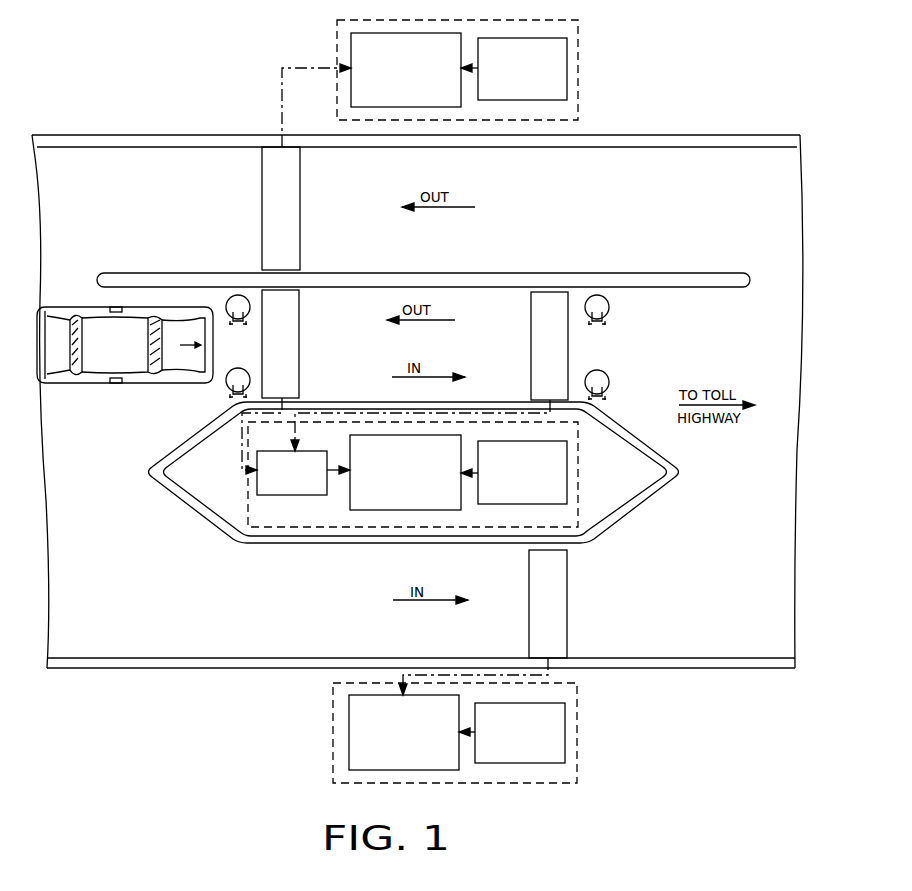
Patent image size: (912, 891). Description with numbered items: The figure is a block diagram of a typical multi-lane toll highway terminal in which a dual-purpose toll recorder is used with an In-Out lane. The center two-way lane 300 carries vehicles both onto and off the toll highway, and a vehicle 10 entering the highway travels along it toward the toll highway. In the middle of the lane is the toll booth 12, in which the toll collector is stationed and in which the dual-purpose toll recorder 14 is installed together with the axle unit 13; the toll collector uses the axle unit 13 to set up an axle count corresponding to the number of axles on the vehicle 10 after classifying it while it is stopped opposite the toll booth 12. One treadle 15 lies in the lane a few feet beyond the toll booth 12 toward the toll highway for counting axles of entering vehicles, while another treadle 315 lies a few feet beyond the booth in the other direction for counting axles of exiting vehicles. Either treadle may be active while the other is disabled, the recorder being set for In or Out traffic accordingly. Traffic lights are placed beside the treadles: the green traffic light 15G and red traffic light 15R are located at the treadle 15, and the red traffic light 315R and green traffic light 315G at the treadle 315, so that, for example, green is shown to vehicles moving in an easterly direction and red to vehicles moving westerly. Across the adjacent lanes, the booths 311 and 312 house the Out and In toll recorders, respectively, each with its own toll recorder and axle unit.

The vehicle 10 is at (100, 383).
The toll booth 12 is at (575, 476).
The axle unit 13 is at (563, 450).
The dual-purpose toll recorder 14 is at (461, 440).
The treadle 15 is at (537, 348).
The red traffic light 15R is at (609, 305).
The green traffic light 15G is at (607, 388).
The two-way lane 300 is at (468, 357).
The Out toll recorder booth 311 is at (578, 47).
The In toll recorder booth 312 is at (577, 740).
The treadle 315 is at (299, 352).
The red traffic light 315R is at (227, 304).
The green traffic light 315G is at (228, 385).